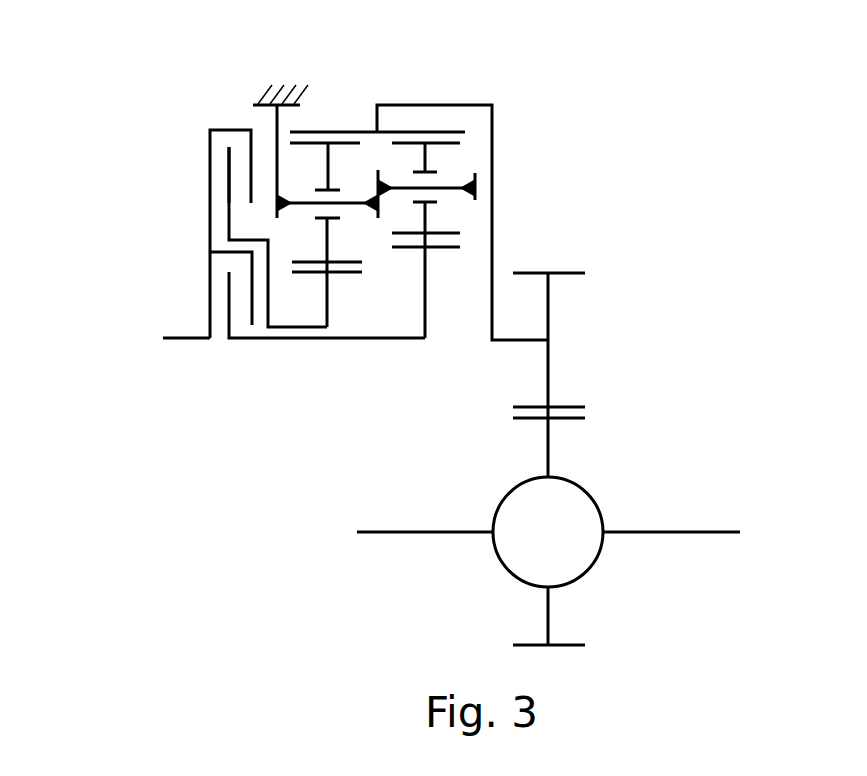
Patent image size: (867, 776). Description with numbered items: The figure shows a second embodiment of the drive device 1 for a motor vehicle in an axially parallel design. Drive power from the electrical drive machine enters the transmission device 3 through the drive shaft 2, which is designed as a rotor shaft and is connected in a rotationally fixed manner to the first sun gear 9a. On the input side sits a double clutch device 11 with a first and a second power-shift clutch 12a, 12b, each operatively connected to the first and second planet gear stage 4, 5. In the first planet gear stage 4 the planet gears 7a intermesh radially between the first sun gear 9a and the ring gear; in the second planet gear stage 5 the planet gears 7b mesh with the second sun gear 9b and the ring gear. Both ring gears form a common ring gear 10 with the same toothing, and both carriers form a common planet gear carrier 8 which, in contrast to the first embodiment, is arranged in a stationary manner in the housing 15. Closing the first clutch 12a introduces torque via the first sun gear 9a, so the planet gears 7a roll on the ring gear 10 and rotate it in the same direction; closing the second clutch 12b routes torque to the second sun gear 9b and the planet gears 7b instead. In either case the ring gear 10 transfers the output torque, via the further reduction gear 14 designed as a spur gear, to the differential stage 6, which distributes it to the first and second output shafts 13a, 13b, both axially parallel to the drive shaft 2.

The drive device 1 is at (127, 48).
The drive shaft 2 is at (185, 343).
The transmission device 3 is at (547, 135).
The first planet gear stage 4 is at (365, 64).
The second planet gear stage 5 is at (463, 64).
The differential stage 6 is at (545, 530).
The planet gears of the first planet set 7a is at (326, 158).
The planet gears of the second planet set 7b is at (427, 160).
The common planet gear carrier 8 is at (447, 193).
The first sun gear 9a is at (330, 303).
The second sun gear 9b is at (428, 300).
The common ring gear 10 is at (322, 132).
The double clutch device 11 is at (196, 144).
The first power-shift clutch 12a is at (228, 305).
The second power-shift clutch 12b is at (230, 187).
The first output shaft 13a is at (437, 530).
The second output shaft 13b is at (667, 530).
The further reduction gear 14 is at (550, 315).
The housing 15 is at (270, 95).